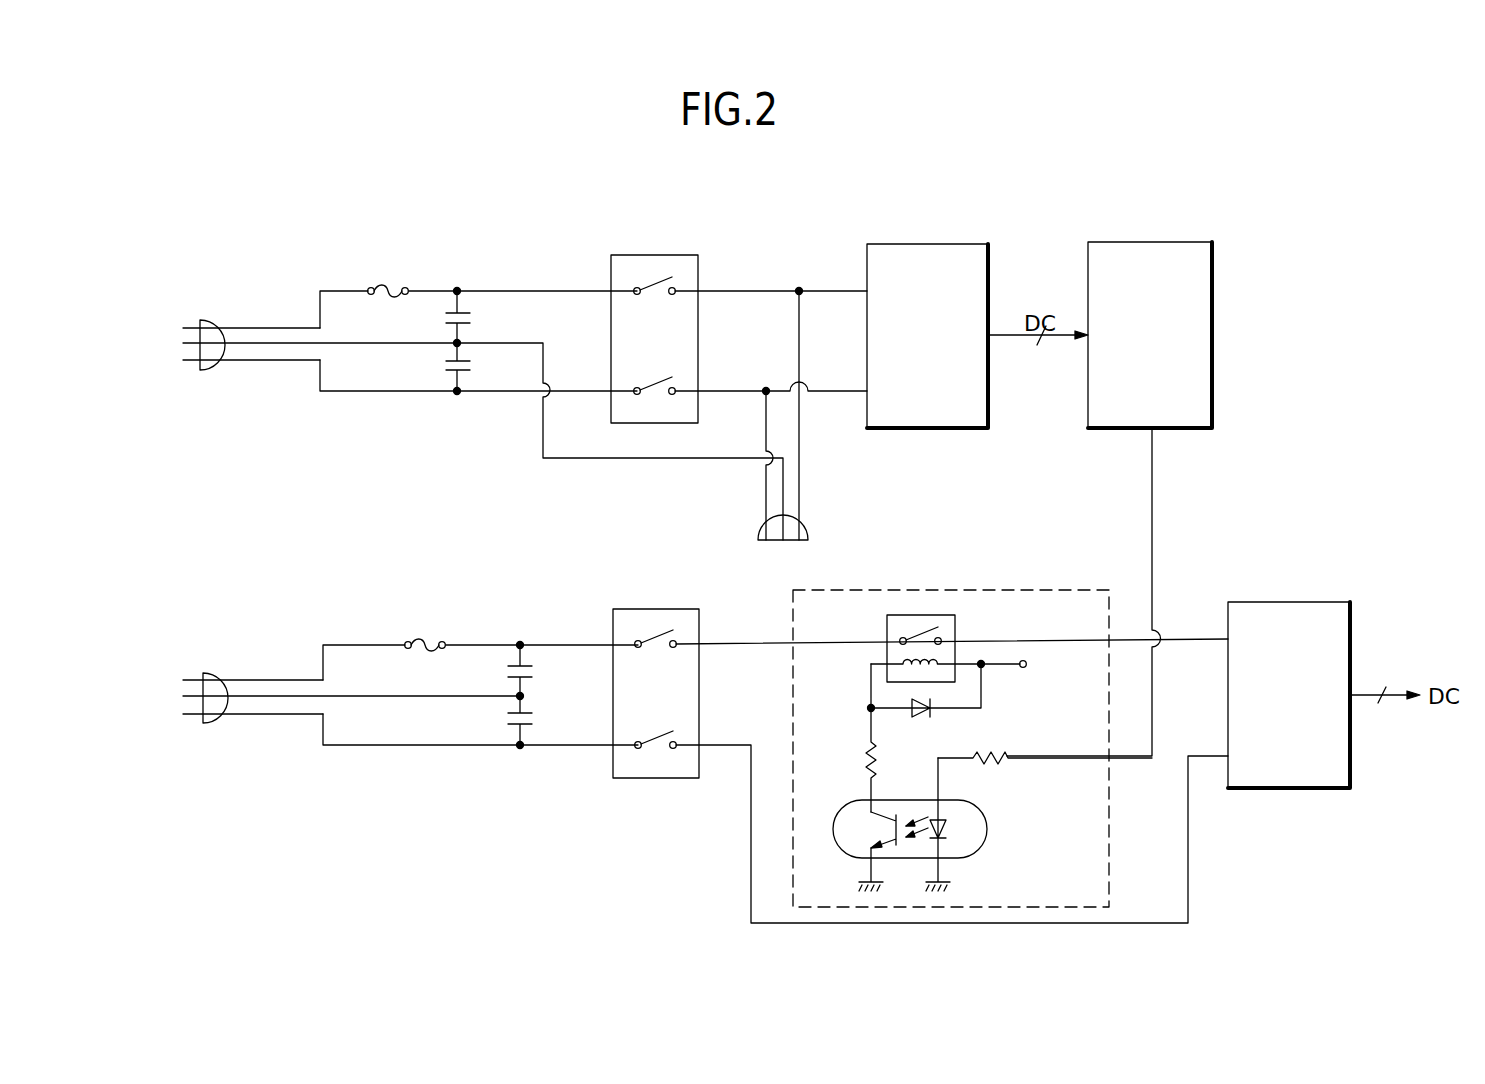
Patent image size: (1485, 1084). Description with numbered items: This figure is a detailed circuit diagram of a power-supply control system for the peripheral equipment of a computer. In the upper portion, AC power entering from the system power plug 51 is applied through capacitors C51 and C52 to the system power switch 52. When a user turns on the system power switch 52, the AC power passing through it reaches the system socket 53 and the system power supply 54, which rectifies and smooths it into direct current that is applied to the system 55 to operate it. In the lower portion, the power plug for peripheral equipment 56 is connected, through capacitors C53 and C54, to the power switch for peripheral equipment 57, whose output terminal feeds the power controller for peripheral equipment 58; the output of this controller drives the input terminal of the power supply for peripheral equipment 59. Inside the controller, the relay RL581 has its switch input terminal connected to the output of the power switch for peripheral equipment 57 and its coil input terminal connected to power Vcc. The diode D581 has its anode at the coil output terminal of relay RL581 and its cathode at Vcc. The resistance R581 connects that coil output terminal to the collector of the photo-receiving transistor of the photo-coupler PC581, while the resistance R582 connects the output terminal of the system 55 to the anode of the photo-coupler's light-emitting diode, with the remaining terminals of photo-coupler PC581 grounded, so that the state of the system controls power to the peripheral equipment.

The system power plug 51 is at (210, 320).
The system power switch 52 is at (655, 255).
The system socket 53 is at (757, 531).
The system power supply 54 is at (925, 244).
The system 55 is at (1150, 242).
The power plug for peripheral equipment 56 is at (212, 673).
The power switch for peripheral equipment 57 is at (655, 609).
The power controller for peripheral equipment 58 is at (945, 590).
The power supply for peripheral equipment 59 is at (1290, 602).
The capacitor C51 is at (483, 317).
The capacitor C52 is at (483, 367).
The capacitor C53 is at (545, 670).
The capacitor C54 is at (545, 720).
The relay RL581 is at (955, 622).
The diode D581 is at (926, 708).
The resistance R581 is at (839, 760).
The resistance R582 is at (1045, 747).
The photo-coupler PC581 is at (987, 830).